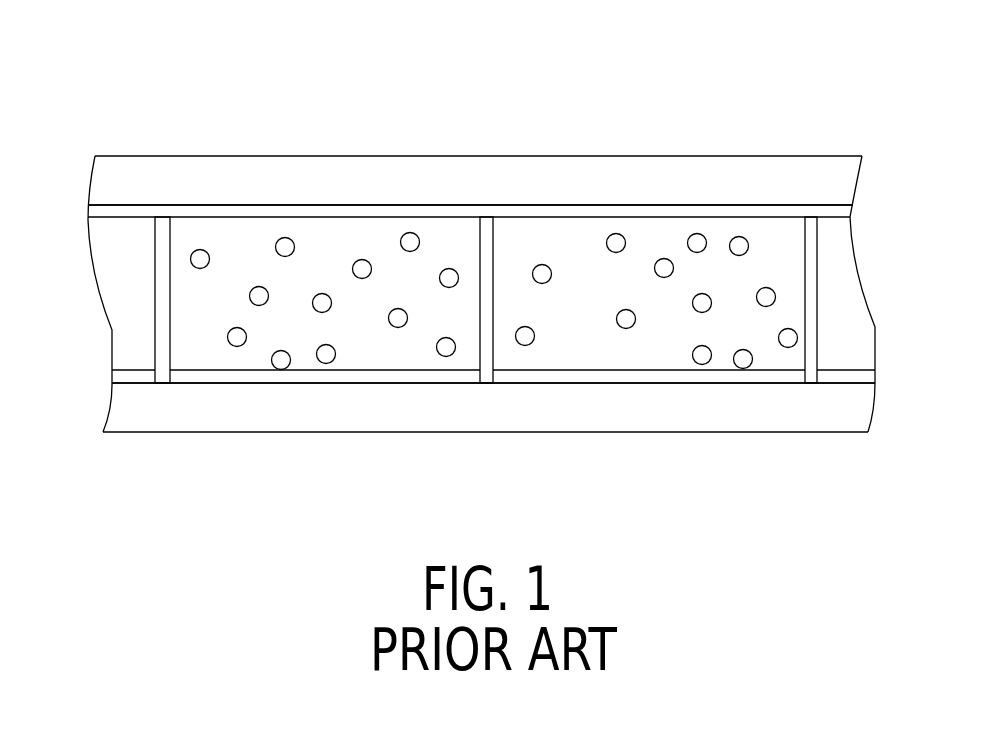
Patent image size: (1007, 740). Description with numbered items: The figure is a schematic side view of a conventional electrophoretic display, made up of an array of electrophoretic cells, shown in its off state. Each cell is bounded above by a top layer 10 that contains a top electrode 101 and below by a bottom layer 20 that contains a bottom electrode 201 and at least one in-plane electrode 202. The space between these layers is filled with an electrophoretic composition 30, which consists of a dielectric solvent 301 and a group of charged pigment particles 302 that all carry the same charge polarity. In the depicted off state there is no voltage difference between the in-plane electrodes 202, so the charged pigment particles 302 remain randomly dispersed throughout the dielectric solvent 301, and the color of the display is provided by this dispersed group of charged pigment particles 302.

The top layer 10 is at (584, 130).
The top electrode 101 is at (832, 210).
The bottom layer 20 is at (656, 450).
The bottom electrode 201 is at (835, 378).
The in-plane electrode 202 is at (813, 295).
The electrophoretic composition 30 is at (248, 216).
The dielectric solvent 301 is at (182, 227).
The charged pigment particles 302 is at (280, 366).